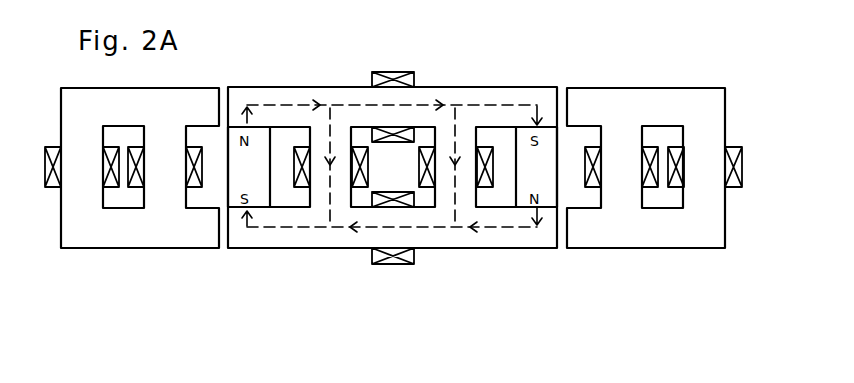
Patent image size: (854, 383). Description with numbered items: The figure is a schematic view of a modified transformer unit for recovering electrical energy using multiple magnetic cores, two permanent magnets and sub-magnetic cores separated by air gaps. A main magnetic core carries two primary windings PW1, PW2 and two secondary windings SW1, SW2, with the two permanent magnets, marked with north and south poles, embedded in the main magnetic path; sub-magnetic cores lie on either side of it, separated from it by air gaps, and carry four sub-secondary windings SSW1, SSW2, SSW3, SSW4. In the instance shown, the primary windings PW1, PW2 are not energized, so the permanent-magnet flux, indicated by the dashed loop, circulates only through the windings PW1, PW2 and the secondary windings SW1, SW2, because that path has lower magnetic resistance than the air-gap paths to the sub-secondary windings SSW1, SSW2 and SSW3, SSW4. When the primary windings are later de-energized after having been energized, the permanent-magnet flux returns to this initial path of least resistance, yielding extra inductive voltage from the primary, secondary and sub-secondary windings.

The sub-secondary coil of winding SSW1 is at (50, 188).
The sub-secondary coil of winding SSW2 is at (132, 188).
The sub-secondary coil of winding SSW3 is at (591, 188).
The sub-secondary coil of winding SSW4 is at (676, 188).
The primary coil of winding PW1 is at (299, 188).
The primary coil of winding PW2 is at (427, 188).
The secondary coil of winding SW1 is at (393, 264).
The secondary coil of winding SW2 is at (393, 72).